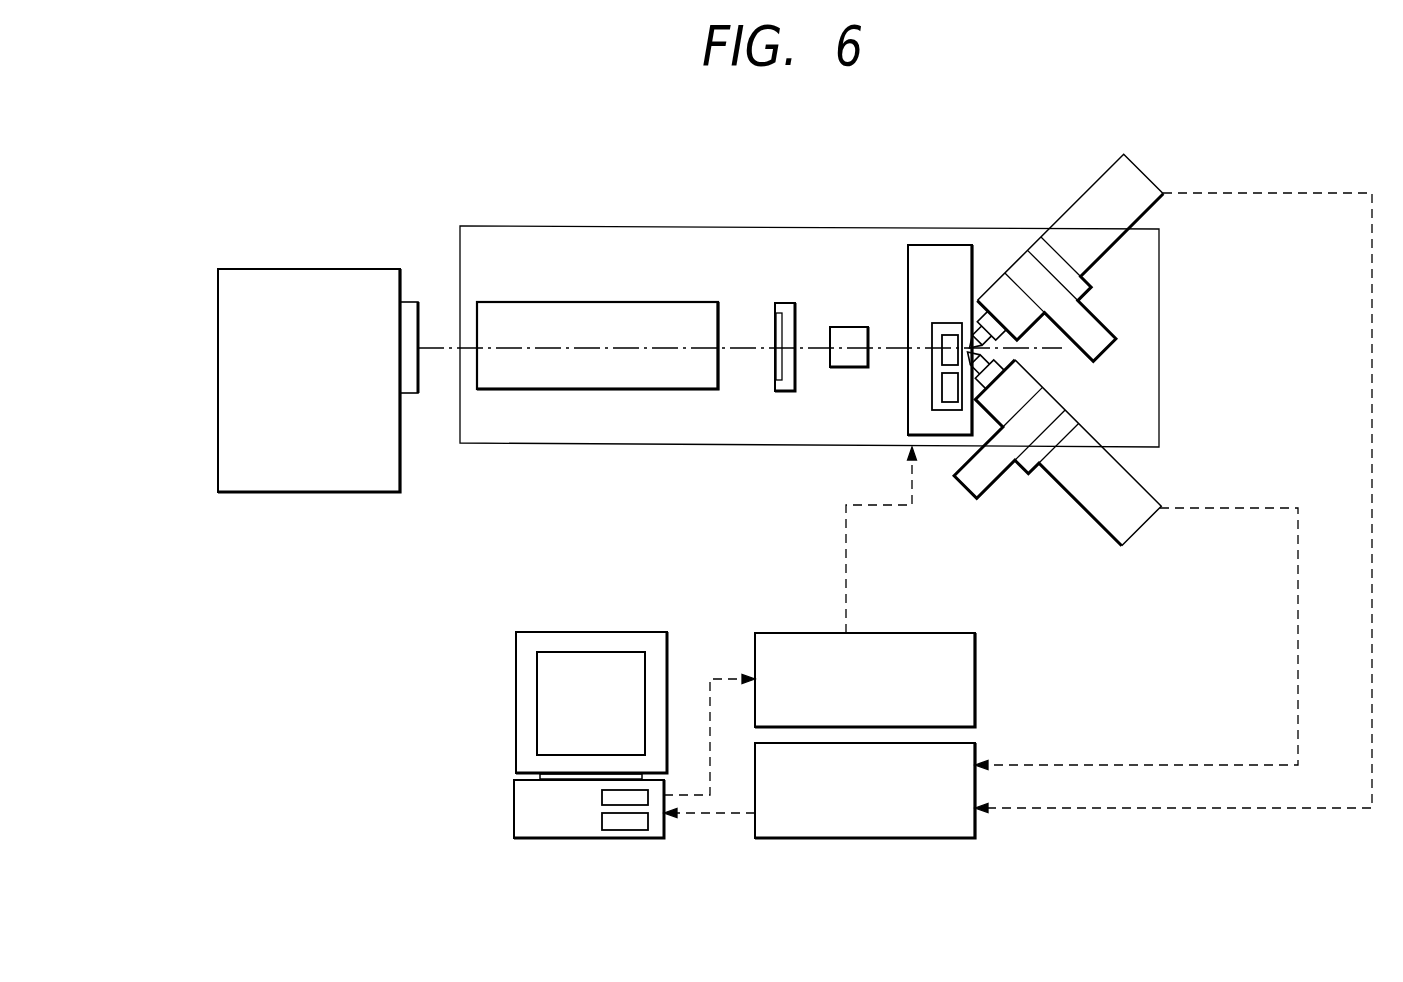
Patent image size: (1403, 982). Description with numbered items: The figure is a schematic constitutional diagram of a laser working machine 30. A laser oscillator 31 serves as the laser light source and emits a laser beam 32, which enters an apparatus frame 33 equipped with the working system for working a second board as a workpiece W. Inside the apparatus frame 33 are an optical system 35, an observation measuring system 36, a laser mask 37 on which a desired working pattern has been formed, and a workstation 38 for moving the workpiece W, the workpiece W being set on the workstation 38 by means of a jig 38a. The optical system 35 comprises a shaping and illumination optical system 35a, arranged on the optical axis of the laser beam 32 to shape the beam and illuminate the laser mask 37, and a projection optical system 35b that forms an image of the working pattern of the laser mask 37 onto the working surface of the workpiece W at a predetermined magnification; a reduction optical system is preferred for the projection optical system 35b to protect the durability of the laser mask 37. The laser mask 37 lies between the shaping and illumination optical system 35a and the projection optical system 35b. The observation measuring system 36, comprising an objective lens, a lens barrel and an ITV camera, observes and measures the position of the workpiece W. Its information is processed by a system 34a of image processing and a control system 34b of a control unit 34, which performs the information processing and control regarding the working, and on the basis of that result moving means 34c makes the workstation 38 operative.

The laser working machine 30 is at (903, 190).
The laser oscillator 31 is at (305, 269).
The laser beam 32 is at (436, 347).
The apparatus frame 33 is at (498, 458).
The control unit 34 is at (490, 748).
The system of image processing 34a is at (953, 839).
The control system 34b is at (513, 803).
The moving means 34c is at (955, 633).
The optical system 35 is at (675, 302).
The shaping and illumination optical system 35a is at (572, 302).
The projection optical system 35b is at (846, 327).
The observation measuring system 36 is at (1168, 153).
The laser mask 37 is at (774, 358).
The workstation 38 is at (952, 245).
The jig 38a is at (942, 323).
The workpiece W is at (938, 357).